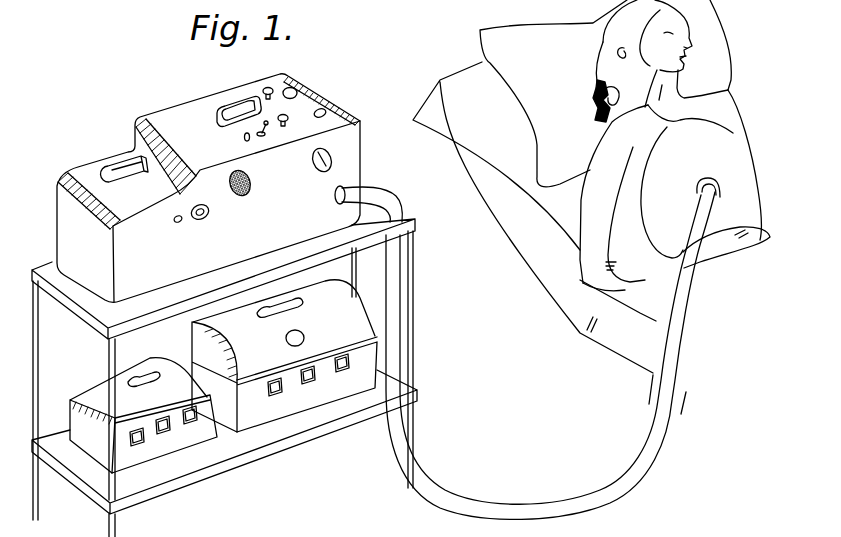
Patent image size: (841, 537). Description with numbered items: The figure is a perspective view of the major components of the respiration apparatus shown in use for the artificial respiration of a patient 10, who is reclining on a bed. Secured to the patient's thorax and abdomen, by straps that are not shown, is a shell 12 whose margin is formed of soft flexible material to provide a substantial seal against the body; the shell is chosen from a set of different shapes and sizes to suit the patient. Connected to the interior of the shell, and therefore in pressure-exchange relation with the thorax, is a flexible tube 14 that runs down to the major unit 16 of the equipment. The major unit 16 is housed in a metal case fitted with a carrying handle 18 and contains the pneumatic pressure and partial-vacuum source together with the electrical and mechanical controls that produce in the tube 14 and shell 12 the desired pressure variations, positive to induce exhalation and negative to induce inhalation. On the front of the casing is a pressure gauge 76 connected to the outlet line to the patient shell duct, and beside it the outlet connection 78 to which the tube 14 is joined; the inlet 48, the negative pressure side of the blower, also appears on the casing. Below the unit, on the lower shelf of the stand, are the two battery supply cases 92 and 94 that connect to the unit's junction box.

The patient 10 is at (740, 60).
The shell 12 is at (708, 170).
The flexible tube 14 is at (378, 193).
The major unit 16 is at (343, 101).
The carrying handle 18 is at (240, 105).
The inlet 48 is at (247, 193).
The pressure gauge 76 is at (316, 167).
The outlet connection 78 is at (332, 201).
The battery supply case 92 is at (168, 448).
The battery supply case 94 is at (307, 403).